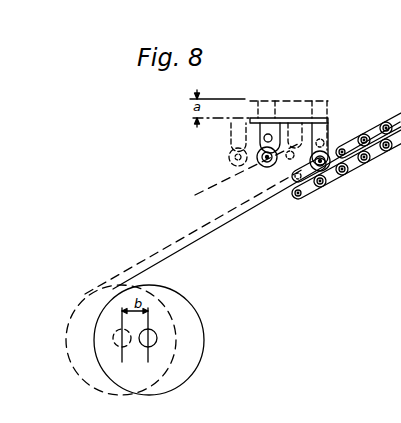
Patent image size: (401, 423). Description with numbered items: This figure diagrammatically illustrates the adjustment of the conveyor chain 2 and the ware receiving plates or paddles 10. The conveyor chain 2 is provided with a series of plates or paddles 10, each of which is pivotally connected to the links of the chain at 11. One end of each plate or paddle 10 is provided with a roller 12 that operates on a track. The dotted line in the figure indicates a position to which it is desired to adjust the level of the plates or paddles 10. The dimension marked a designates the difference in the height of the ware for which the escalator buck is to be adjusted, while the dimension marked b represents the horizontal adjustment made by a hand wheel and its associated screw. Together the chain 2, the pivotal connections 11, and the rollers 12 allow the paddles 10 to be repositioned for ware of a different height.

The conveyor chain 2 is at (337, 178).
The plates or paddles 10 is at (293, 116).
The pivotal connection 11 is at (327, 132).
The roller 12 is at (267, 167).